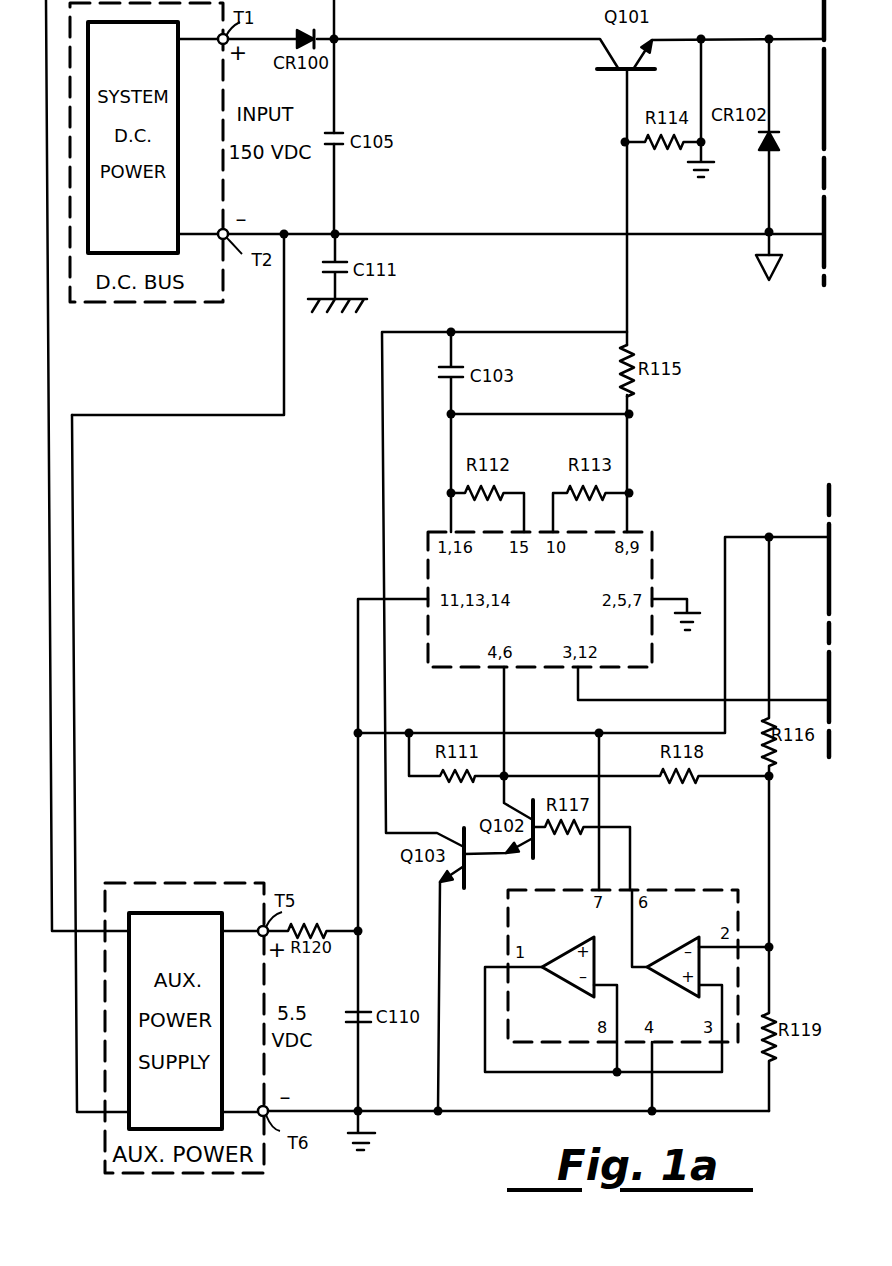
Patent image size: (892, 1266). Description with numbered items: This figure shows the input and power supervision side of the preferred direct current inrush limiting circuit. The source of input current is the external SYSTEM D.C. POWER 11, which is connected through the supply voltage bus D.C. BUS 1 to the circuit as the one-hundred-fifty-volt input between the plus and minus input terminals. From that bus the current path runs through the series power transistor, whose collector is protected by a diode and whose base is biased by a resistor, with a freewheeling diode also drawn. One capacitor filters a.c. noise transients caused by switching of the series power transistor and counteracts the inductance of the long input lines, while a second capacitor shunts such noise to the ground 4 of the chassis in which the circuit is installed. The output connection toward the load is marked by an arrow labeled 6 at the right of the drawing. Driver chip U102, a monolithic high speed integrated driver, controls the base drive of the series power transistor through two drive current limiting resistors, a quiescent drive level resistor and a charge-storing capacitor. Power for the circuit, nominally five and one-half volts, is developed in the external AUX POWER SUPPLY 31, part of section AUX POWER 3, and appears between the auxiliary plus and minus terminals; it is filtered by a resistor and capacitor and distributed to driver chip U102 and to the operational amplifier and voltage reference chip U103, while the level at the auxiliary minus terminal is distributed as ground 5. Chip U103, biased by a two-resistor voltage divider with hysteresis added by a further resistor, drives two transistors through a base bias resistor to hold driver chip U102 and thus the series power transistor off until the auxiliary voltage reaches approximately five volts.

The D.C. BUS 1 is at (118, 303).
The SYSTEM D.C. POWER 11 is at (178, 154).
The AUX POWER 3 is at (158, 1175).
The AUX POWER SUPPLY 31 is at (222, 1005).
The ground of the chassis 4 is at (336, 305).
The ground 5 is at (375, 1137).
The output connection to load 6 is at (760, 265).
The driver chip U102 is at (648, 530).
The operational amplifier and voltage reference chip U103 is at (693, 888).